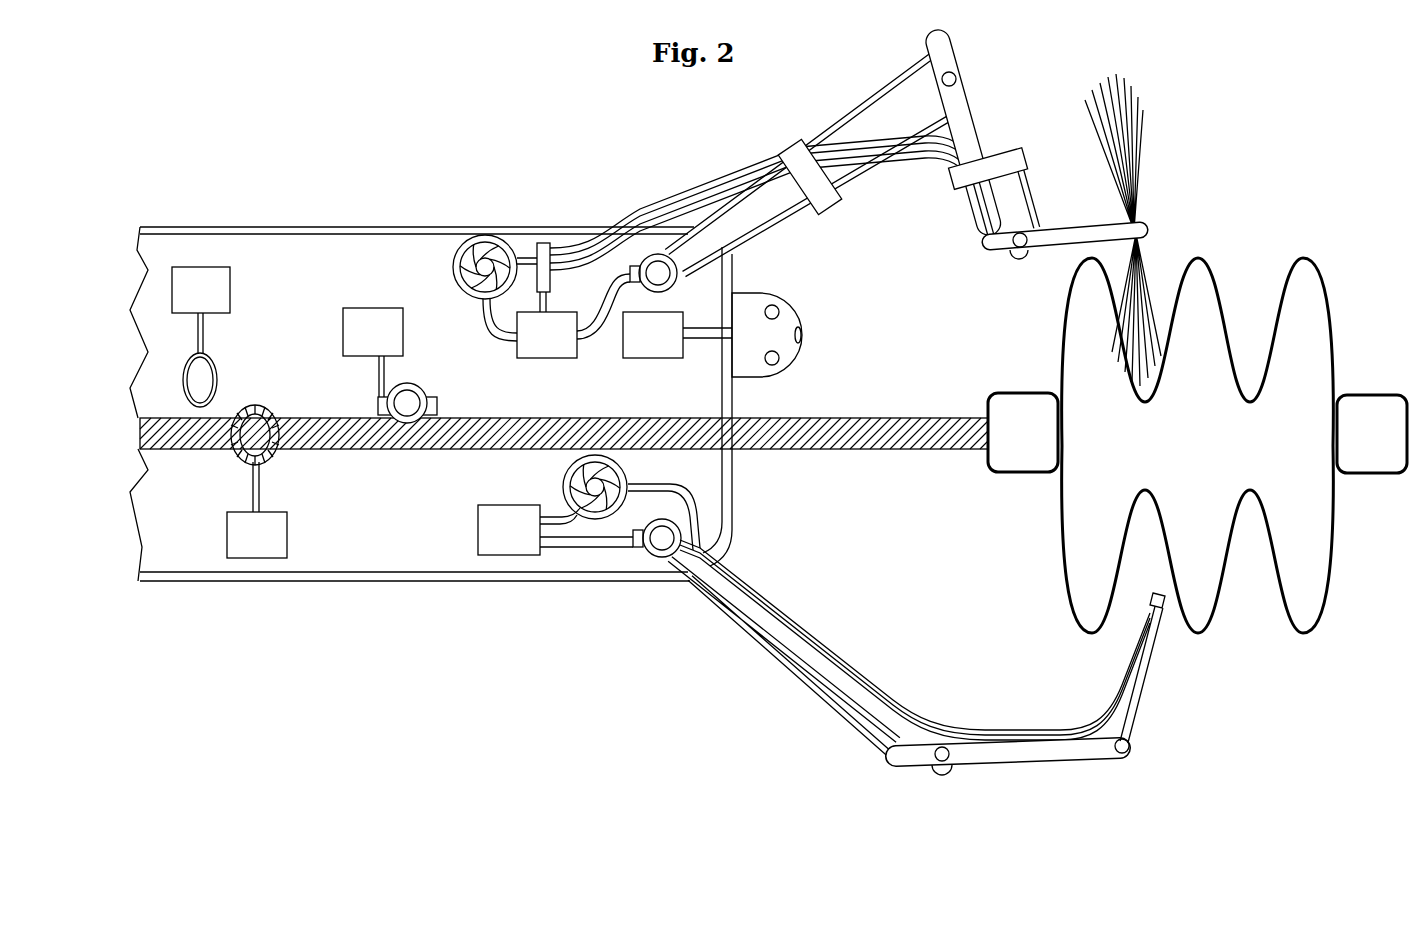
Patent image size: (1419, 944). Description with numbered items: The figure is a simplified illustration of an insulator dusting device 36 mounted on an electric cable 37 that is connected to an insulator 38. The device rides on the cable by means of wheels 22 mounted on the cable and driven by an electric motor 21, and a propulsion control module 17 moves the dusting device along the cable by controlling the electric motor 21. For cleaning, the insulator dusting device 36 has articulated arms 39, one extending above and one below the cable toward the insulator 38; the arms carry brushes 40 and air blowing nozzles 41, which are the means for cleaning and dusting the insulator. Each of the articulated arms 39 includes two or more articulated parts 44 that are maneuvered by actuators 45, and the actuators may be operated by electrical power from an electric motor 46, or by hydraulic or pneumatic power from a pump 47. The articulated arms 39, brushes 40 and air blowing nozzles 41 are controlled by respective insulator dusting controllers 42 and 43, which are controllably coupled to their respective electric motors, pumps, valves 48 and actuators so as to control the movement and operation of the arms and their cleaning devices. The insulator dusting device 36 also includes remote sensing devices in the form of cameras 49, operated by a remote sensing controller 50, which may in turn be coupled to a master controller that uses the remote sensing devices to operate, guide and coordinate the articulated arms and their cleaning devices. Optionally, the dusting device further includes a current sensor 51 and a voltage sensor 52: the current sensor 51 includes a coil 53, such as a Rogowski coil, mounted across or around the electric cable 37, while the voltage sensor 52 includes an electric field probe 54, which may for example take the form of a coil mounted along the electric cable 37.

The propulsion control module 17 is at (358, 306).
The electric motor 21 is at (383, 398).
The wheels 22 is at (422, 390).
The insulator dusting device 36 is at (378, 188).
The electric cable 37 is at (913, 412).
The insulator 38 is at (1205, 255).
The articulated arms 39 is at (833, 90).
The brushes 40 is at (1148, 150).
The air blowing nozzles 41 is at (1158, 590).
The insulator dusting controller 42 is at (540, 362).
The insulator dusting controller 43 is at (474, 527).
The articulated parts 44 is at (975, 93).
The actuators 45 is at (1015, 148).
The electric motor 46 is at (688, 273).
The pump 47 is at (453, 268).
The valves 48 is at (545, 242).
The cameras 49 is at (778, 308).
The remote sensing controller 50 is at (652, 360).
The current sensor 51 is at (293, 520).
The voltage sensor 52 is at (233, 292).
The coil 53 is at (228, 455).
The electric field probe 54 is at (223, 373).